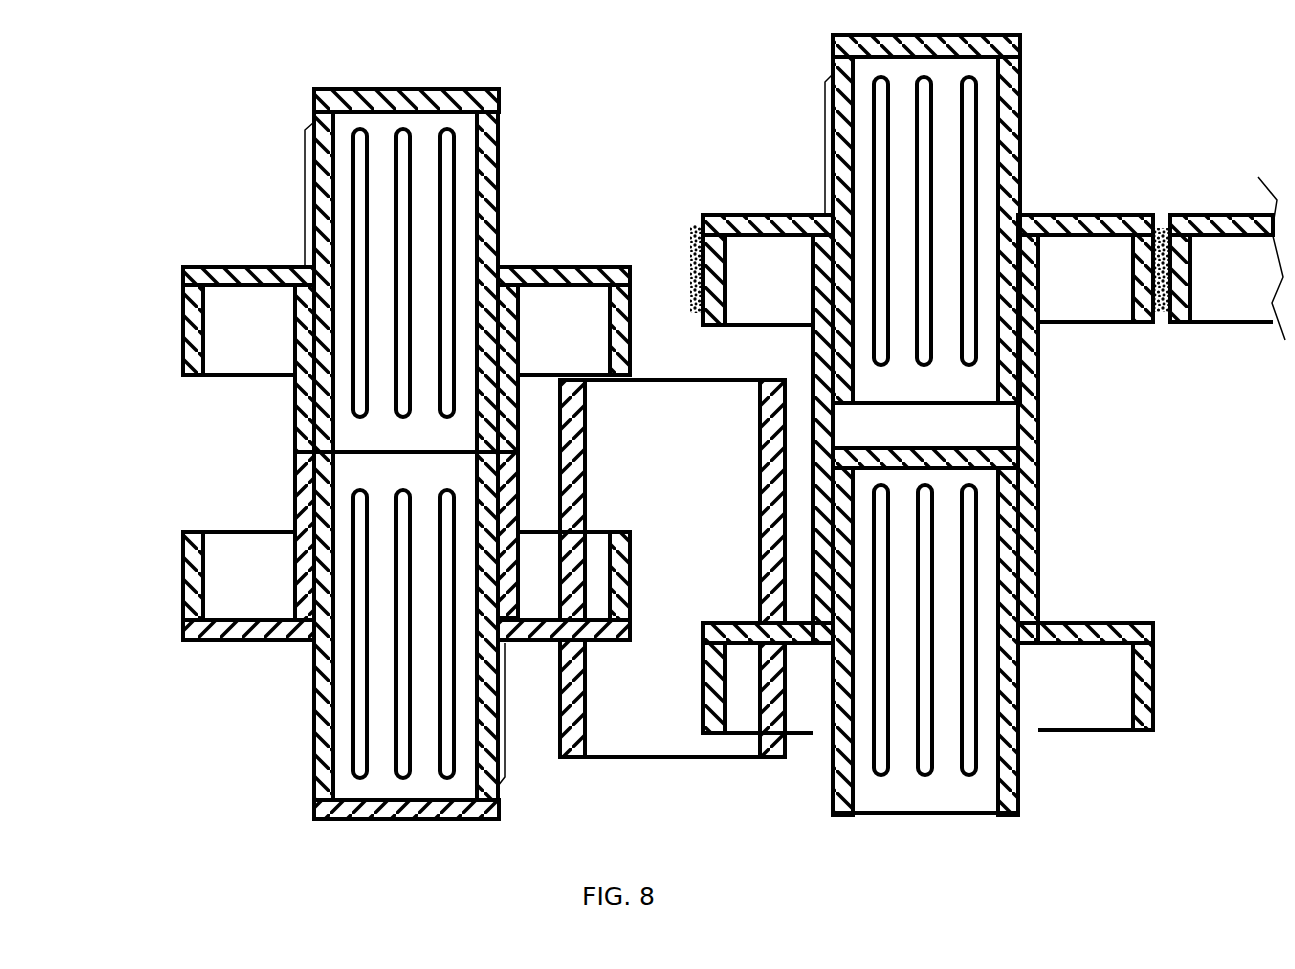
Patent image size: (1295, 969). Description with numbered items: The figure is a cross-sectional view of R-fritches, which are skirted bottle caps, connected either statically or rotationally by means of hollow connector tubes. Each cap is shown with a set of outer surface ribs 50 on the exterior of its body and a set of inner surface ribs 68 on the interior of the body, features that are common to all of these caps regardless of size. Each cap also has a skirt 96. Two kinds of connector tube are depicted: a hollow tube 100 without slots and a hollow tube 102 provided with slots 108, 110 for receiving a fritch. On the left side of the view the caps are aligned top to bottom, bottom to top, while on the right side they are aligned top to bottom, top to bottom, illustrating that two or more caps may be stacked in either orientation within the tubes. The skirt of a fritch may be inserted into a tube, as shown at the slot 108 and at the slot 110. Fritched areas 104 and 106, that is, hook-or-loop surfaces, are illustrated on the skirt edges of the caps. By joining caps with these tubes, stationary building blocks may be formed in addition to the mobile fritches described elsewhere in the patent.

The outer surface ribs 50 is at (621, 441).
The inner surface ribs 68 is at (665, 479).
The skirt 96 is at (677, 485).
The hollow tube without slots 100 is at (666, 439).
The hollow tube with slots 102 is at (672, 614).
The fritched area 104 is at (727, 246).
The fritched area 106 is at (1151, 236).
The slot 108 is at (626, 684).
The slot 110 is at (768, 622).